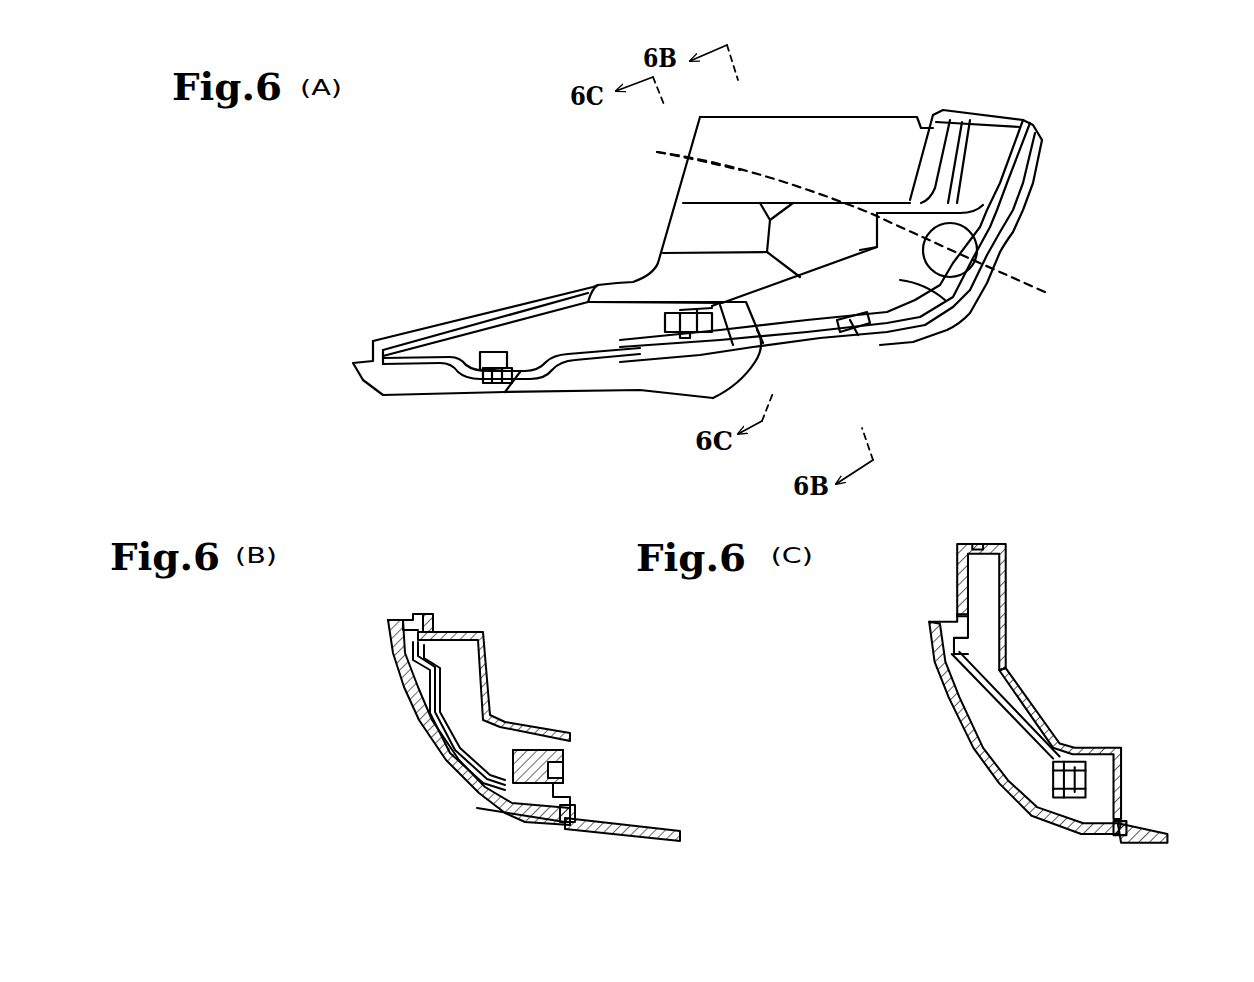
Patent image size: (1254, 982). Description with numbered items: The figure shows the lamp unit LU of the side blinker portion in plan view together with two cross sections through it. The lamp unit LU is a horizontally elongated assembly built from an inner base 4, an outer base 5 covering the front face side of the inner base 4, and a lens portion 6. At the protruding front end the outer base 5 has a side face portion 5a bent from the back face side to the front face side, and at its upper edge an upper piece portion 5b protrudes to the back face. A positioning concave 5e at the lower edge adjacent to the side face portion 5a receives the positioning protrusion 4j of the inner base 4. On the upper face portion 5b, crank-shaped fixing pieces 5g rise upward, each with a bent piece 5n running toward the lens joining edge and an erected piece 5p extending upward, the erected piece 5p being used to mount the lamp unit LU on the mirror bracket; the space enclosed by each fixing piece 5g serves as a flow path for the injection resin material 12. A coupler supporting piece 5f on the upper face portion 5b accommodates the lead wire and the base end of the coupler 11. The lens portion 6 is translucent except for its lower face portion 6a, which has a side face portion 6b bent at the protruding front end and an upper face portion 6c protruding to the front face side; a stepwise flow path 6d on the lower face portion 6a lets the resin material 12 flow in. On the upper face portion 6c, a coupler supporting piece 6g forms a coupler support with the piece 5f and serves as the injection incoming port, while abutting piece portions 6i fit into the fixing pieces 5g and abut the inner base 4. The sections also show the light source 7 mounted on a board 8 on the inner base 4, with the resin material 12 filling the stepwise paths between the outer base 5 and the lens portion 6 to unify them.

In FIG. 6A, the lamp unit LU is at (1088, 147).
In FIG. 6B, the inner base 4 is at (432, 715).
In FIG. 6C, the inner base 4 is at (1005, 693).
In FIG. 6A, the positioning protrusion 4j is at (868, 234).
In FIG. 6B, the outer base 5 is at (499, 672).
In FIG. 6C, the outer base 5 is at (1000, 607).
In FIG. 6A, the side face portion 5a is at (987, 140).
In FIG. 6A, the upper piece portion 5b is at (905, 280).
In FIG. 6B, the upper piece portion 5b is at (460, 632).
In FIG. 6A, the positioning concave 5e is at (673, 150).
In FIG. 6A, the coupler supporting piece 5f is at (735, 300).
In FIG. 6C, the coupler supporting piece 5f is at (995, 565).
In FIG. 6A, the fixing piece 5g is at (505, 384).
In FIG. 6A, the bent piece 5n is at (491, 352).
In FIG. 6A, the erected piece 5p is at (488, 384).
In FIG. 6A, the lens portion 6 is at (1000, 310).
In FIG. 6B, the lens portion 6 is at (385, 675).
In FIG. 6C, the lens portion 6 is at (922, 680).
In FIG. 6A, the lower face portion 6a is at (880, 147).
In FIG. 6B, the lower face portion 6a is at (610, 838).
In FIG. 6C, the lower face portion 6a is at (1130, 814).
In FIG. 6A, the side face portion 6b is at (1023, 190).
In FIG. 6A, the upper face portion 6c is at (593, 373).
In FIG. 6B, the upper face portion 6c is at (397, 617).
In FIG. 6C, the upper face portion 6c is at (940, 607).
In FIG. 6B, the flow path 6d is at (568, 840).
In FIG. 6C, the flow path 6d is at (1099, 876).
In FIG. 6A, the coupler supporting piece 6g is at (713, 400).
In FIG. 6C, the coupler supporting piece 6g is at (950, 572).
In FIG. 6A, the abutting piece portion 6i is at (520, 372).
In FIG. 6A, the light source 7 is at (850, 97).
In FIG. 6C, the light source 7 is at (998, 799).
In FIG. 6C, the printed circuit board 8 is at (1067, 745).
In FIG. 6A, the coupler 11 is at (630, 283).
In FIG. 6A, the injection resin material 12 is at (393, 338).
In FIG. 6B, the injection resin material 12 is at (428, 613).
In FIG. 6C, the injection resin material 12 is at (966, 537).